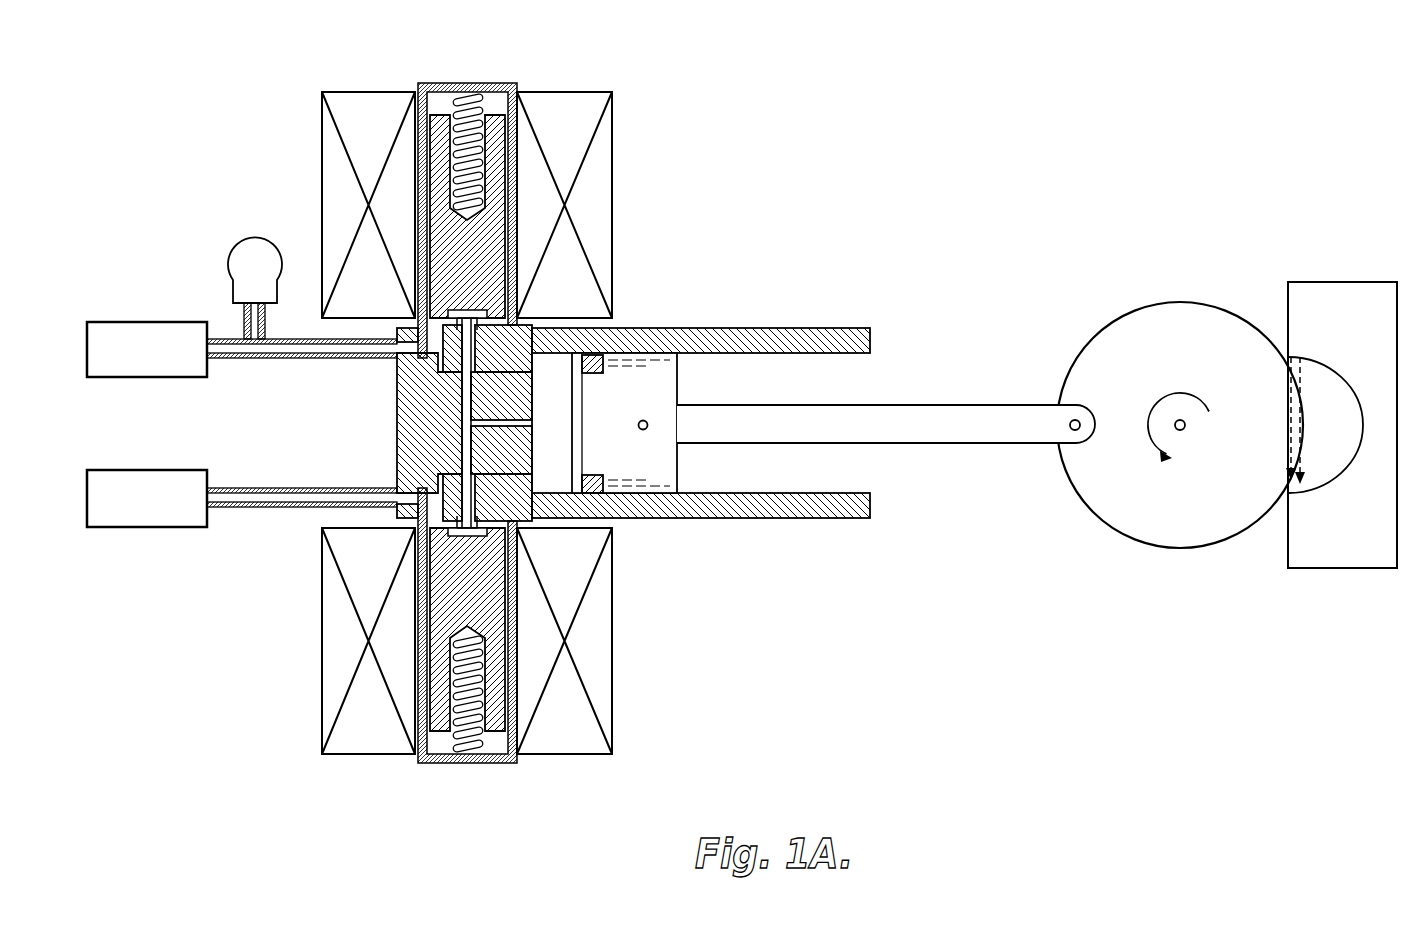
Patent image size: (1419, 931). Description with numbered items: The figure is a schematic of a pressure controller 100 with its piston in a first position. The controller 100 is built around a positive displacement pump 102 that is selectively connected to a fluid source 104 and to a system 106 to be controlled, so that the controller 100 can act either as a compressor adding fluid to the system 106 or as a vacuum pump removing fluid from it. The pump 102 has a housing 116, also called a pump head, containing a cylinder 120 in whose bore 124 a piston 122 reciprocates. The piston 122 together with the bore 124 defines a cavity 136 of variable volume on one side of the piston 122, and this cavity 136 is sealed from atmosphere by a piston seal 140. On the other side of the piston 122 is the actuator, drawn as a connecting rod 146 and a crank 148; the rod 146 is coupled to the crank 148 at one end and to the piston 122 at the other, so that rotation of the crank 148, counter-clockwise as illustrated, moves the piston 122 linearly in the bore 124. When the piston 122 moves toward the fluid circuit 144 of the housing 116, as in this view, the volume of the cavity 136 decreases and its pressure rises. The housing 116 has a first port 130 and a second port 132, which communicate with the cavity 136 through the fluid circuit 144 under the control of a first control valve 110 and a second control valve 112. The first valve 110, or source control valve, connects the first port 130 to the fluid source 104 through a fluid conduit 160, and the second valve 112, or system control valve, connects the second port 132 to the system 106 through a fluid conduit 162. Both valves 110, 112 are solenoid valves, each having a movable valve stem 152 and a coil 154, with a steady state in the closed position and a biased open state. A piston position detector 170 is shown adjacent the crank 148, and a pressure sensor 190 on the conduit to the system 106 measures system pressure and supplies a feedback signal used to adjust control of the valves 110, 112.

The pressure controller 100 is at (166, 128).
The pump 102 is at (808, 282).
The fluid source 104 is at (150, 527).
The system 106 is at (150, 322).
The first control valve 110 is at (430, 763).
The second control valve 112 is at (505, 83).
The housing 116 is at (397, 410).
The cylinder 120 is at (810, 520).
The piston 122 is at (665, 358).
The bore 124 is at (870, 497).
The first port 130 is at (397, 491).
The second port 132 is at (389, 358).
The cavity 136 is at (557, 490).
The piston seal 140 is at (600, 356).
The fluid circuit 144 is at (462, 446).
The connecting rod 146 is at (928, 407).
The crank 148 is at (1170, 302).
The valve stem 152 is at (430, 583).
The coil 154 is at (612, 153).
The fluid conduit 160 is at (263, 507).
The fluid conduit 162 is at (263, 358).
The piston position detector 170 is at (1340, 282).
The pressure sensor 190 is at (254, 237).